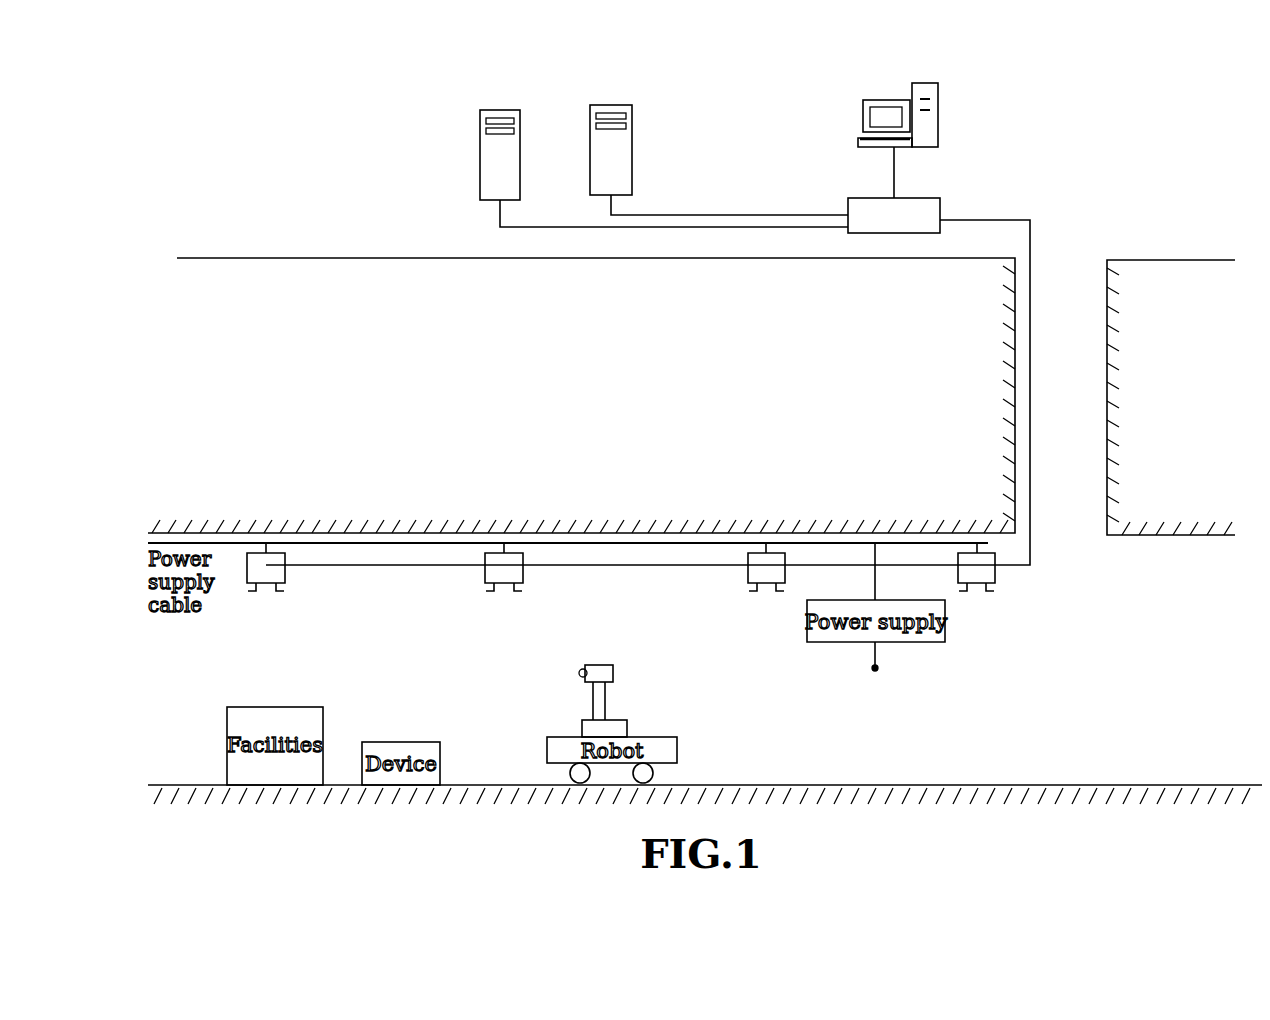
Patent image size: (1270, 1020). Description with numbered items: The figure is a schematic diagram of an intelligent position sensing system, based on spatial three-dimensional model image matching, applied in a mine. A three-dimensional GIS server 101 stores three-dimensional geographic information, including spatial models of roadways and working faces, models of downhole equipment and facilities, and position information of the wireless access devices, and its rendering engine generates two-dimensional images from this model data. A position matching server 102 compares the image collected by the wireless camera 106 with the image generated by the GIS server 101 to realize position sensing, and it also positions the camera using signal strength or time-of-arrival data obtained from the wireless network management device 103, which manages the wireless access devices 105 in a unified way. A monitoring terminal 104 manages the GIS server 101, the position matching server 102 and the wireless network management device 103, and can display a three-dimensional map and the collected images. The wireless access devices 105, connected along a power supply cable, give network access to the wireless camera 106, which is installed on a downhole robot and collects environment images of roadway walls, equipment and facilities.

The three-dimensional GIS server 101 is at (664, 152).
The position matching server 102 is at (719, 144).
The wireless network management device 103 is at (894, 215).
The monitoring terminal 104 is at (898, 127).
The wireless access device 105 is at (621, 584).
The wireless camera 106 is at (603, 665).